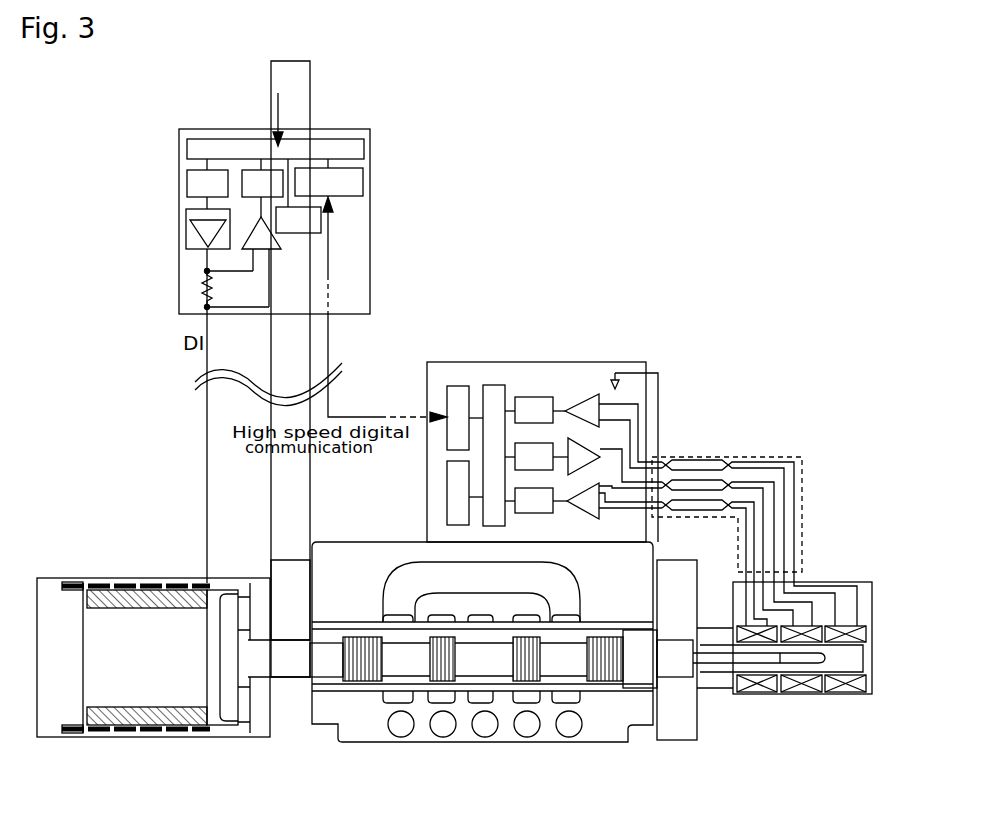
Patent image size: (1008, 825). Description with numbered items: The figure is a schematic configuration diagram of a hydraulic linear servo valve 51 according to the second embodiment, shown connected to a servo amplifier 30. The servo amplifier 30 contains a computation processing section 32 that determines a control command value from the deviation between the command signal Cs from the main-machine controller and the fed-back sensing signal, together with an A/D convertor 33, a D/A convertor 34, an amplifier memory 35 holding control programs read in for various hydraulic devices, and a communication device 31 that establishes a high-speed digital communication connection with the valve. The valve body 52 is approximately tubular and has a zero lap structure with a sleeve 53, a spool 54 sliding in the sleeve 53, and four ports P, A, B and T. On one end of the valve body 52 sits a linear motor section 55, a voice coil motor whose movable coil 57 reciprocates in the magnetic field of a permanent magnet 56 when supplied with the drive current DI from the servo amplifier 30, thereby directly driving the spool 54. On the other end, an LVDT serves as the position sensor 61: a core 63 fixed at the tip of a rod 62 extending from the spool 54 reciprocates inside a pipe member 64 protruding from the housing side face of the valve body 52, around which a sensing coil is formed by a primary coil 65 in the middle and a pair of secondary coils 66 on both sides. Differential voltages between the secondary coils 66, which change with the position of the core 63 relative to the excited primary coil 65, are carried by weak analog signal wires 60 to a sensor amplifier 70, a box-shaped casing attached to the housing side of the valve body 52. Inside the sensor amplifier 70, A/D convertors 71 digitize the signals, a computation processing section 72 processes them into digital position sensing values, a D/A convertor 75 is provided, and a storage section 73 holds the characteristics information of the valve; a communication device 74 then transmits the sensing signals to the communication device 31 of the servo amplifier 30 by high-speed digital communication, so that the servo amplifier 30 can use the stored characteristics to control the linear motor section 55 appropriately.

The servo amplifier 30 is at (178, 129).
The communication device 31 is at (350, 185).
The computation processing section 32 is at (337, 146).
The A/D convertor 33 is at (250, 172).
The D/A convertor 34 is at (187, 183).
The amplifier memory 35 is at (305, 227).
The hydraulic linear servo valve 51 is at (628, 750).
The valve body 52 is at (362, 742).
The sleeve 53 is at (480, 627).
The spool 54 is at (403, 647).
The linear motor section 55 is at (90, 630).
The permanent magnet 56 is at (115, 730).
The movable coil 57 is at (202, 733).
The weak analog signal wire 60 is at (811, 503).
The position sensor 61 is at (857, 582).
The rod 62 is at (728, 664).
The core 63 is at (790, 664).
The pipe member 64 is at (865, 648).
The primary coil 65 is at (803, 692).
The secondary coil 66 is at (749, 692).
The sensor amplifier 70 is at (590, 362).
The A/D convertor 71 is at (528, 402).
The computation processing section 72 is at (497, 392).
The storage section 73 is at (453, 497).
The communication device 74 is at (455, 400).
The D/A convertor 75 is at (550, 447).